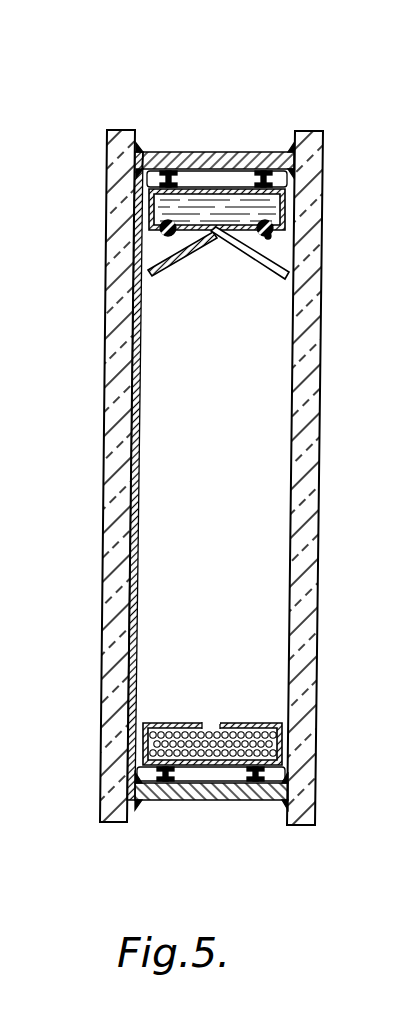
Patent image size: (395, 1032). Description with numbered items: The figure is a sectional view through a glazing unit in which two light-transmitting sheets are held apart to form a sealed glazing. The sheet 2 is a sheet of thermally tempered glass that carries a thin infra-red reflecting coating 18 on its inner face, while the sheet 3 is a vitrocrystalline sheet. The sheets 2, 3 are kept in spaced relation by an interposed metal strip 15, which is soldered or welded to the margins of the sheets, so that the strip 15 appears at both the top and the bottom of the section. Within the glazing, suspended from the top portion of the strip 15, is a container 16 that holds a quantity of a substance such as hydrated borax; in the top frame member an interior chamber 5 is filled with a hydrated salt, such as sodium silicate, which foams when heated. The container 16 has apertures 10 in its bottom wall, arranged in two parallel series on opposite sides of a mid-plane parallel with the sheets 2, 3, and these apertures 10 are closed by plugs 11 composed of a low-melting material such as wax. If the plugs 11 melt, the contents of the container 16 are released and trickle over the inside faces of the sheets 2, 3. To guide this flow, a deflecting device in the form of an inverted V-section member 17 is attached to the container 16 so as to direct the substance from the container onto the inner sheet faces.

The light-transmitting sheet 2 is at (97, 449).
The light-transmitting sheet 3 is at (333, 451).
The interior chamber 5 is at (150, 200).
The apertures 10 is at (270, 238).
The plugs 11 is at (270, 237).
The metal strip 15 is at (213, 152).
The container 16 is at (215, 237).
The inverted V-section member 17 is at (175, 262).
The infra-red reflecting coating 18 is at (137, 543).